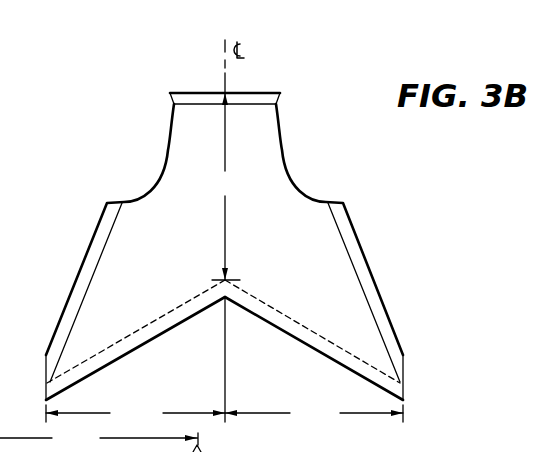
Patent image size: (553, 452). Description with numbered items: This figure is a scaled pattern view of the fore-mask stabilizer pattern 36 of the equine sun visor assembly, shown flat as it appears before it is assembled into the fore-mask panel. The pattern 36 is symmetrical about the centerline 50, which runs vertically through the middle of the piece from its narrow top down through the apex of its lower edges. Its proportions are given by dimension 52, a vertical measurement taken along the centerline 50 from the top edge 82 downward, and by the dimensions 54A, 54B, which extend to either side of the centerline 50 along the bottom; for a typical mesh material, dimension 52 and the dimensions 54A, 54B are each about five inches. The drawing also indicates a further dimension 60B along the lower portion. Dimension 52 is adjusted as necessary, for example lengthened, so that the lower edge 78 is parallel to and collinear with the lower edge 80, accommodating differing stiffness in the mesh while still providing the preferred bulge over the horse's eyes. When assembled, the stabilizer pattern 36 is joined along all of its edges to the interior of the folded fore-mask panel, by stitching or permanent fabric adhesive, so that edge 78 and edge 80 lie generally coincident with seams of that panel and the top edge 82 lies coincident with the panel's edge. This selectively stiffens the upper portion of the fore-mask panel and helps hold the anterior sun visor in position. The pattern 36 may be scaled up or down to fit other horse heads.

The fore-mask stabilizer pattern 36 is at (248, 242).
The centerline 50 is at (222, 64).
The dimension 52 is at (226, 186).
The dimension 54A is at (135, 413).
The dimension 54B is at (314, 413).
The offset dimension 60B is at (100, 439).
The edge 78 is at (145, 340).
The edge 80 is at (310, 340).
The edge 82 is at (268, 92).